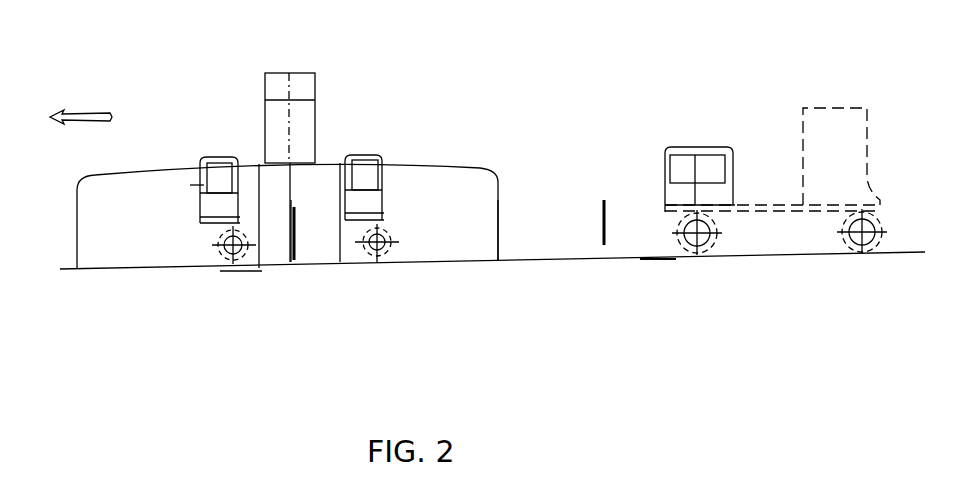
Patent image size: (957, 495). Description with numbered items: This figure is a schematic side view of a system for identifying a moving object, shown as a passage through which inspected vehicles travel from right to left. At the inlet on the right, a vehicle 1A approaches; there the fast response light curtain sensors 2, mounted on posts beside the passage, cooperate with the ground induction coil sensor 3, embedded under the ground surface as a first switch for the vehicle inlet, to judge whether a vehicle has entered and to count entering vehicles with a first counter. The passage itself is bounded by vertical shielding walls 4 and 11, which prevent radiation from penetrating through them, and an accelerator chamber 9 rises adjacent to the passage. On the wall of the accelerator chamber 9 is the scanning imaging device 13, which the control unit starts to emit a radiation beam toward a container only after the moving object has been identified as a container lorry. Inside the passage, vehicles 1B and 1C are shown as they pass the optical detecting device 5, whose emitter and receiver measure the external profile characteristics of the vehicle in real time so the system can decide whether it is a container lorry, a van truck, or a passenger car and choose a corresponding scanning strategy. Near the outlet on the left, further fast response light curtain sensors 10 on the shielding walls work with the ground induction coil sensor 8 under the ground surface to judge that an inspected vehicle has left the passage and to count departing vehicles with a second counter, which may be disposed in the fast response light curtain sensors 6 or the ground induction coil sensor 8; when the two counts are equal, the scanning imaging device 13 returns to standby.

The vehicle 1A is at (728, 193).
The vehicle 1B is at (380, 203).
The vehicle 1C is at (227, 203).
The fast response light curtain sensors 2 is at (605, 200).
The ground induction coil sensor 3 is at (663, 260).
The vertical shielding wall 4 is at (480, 203).
The optical detecting device 5 is at (293, 203).
The fast response light curtain sensors 6 is at (296, 270).
The ground induction coil sensor 8 is at (263, 268).
The accelerator chamber 9 is at (272, 178).
The fast response light curtain sensors 10 is at (197, 184).
The vertical shielding wall 11 is at (162, 183).
The scanning imaging device 13 is at (302, 163).